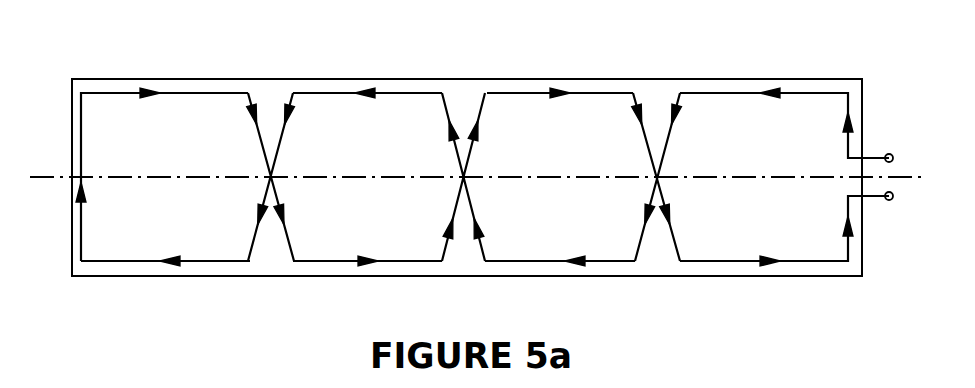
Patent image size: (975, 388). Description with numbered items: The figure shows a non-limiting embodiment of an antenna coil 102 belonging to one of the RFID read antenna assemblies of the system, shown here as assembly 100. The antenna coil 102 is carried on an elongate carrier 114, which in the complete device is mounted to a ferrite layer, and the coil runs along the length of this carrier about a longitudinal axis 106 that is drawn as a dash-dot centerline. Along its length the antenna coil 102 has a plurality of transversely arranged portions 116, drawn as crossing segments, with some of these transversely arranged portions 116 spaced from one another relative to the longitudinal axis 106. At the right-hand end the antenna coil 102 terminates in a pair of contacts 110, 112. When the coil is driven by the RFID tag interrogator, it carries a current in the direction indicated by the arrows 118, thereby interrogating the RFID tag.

The inductive sensor coil assembly 100 is at (583, 80).
The antenna coil 102 is at (208, 95).
The longitudinal axis 106 is at (138, 177).
The contact 110 is at (889, 153).
The contact 112 is at (889, 201).
The elongate carrier 114 is at (151, 268).
The transversely arranged portions 116 is at (253, 237).
The arrows 118 is at (366, 93).